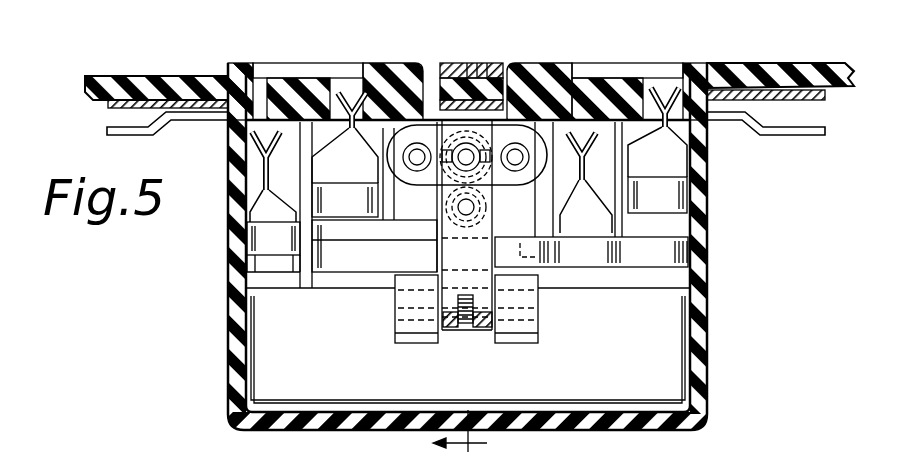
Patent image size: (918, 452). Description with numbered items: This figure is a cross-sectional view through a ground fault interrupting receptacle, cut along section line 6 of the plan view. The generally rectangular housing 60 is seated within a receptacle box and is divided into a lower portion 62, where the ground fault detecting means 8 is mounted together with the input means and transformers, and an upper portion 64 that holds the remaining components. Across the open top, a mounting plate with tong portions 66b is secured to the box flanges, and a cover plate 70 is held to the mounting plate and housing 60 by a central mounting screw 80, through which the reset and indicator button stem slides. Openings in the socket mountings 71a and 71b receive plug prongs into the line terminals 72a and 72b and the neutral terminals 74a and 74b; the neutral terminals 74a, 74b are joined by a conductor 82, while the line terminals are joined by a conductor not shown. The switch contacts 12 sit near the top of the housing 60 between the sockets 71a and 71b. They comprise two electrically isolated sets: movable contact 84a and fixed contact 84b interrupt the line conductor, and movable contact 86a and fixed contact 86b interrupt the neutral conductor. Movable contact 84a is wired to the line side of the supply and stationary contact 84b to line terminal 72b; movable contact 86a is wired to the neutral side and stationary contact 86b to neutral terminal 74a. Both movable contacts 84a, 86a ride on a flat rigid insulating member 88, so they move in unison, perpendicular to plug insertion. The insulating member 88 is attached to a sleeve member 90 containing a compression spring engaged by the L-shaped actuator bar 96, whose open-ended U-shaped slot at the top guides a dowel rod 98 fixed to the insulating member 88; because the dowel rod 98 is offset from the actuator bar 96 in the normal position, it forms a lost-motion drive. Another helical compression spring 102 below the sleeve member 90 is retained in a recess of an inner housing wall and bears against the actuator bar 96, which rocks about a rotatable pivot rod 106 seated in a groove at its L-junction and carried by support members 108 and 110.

The section line 6 is at (465, 431).
The ground fault detecting means 8 is at (467, 0).
The switch contacts 12 is at (437, 193).
The housing 60 is at (709, 330).
The lower portion of the housing 62 is at (665, 307).
The upper portion of the housing 64 is at (702, 185).
The tong portions of the mounting plate 66b is at (110, 106).
The cover plate 70 is at (123, 75).
The socket mounting 71a is at (296, 63).
The socket mounting 71b is at (625, 65).
The line terminal 72a is at (262, 78).
The line terminal 72b is at (573, 133).
The neutral terminal 74a is at (352, 100).
The neutral terminal 74b is at (662, 113).
The mounting screw 80 is at (453, 80).
The conductor 82 is at (662, 253).
The movable contact 84a is at (513, 143).
The fixed contact 84b is at (520, 143).
The movable contact 86a is at (405, 150).
The fixed contact 86b is at (416, 143).
The insulating member 88 is at (505, 179).
The sleeve member 90 is at (455, 140).
The actuator bar 96 is at (446, 150).
The dowel rod 98 is at (486, 122).
The helical compression spring 102 is at (477, 218).
The pivot rod 106 is at (467, 328).
The support member 108 is at (530, 325).
The support member 110 is at (410, 333).